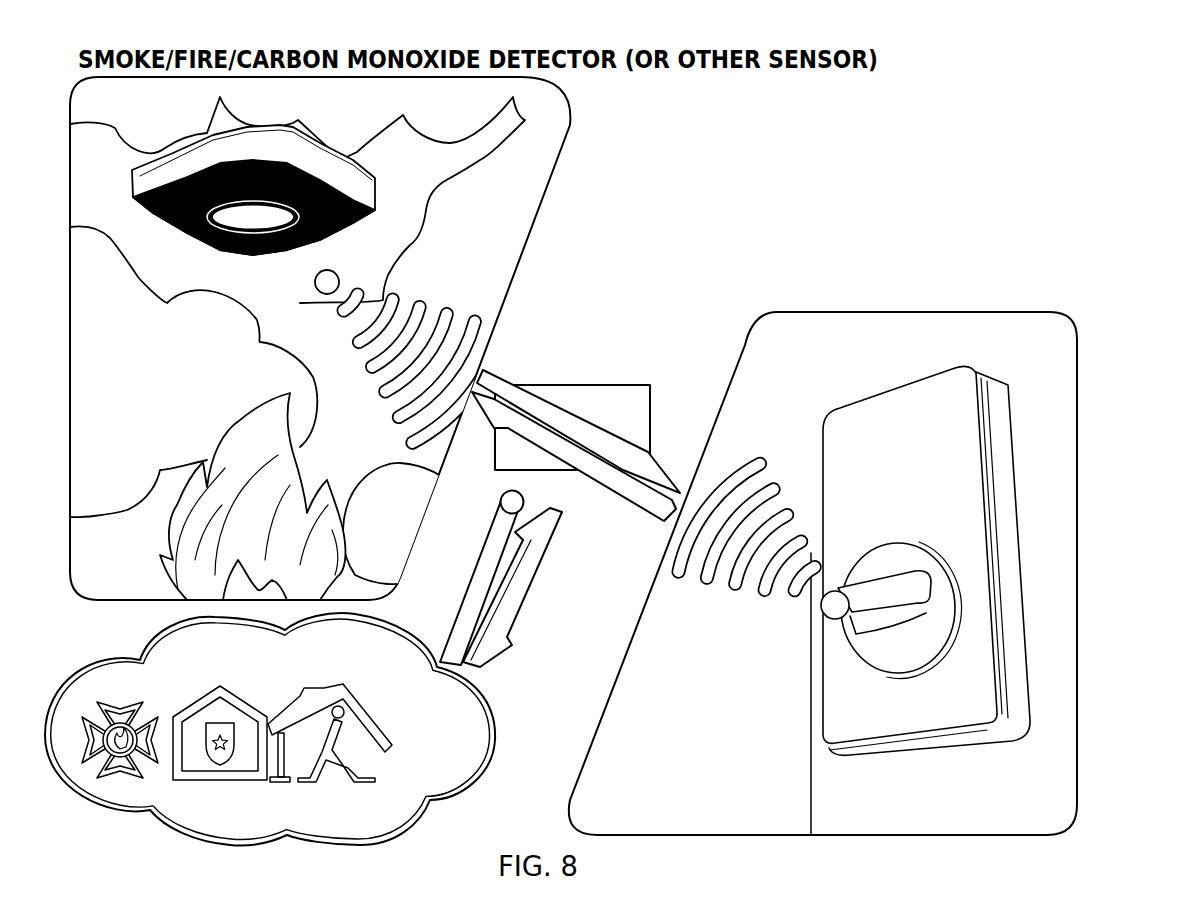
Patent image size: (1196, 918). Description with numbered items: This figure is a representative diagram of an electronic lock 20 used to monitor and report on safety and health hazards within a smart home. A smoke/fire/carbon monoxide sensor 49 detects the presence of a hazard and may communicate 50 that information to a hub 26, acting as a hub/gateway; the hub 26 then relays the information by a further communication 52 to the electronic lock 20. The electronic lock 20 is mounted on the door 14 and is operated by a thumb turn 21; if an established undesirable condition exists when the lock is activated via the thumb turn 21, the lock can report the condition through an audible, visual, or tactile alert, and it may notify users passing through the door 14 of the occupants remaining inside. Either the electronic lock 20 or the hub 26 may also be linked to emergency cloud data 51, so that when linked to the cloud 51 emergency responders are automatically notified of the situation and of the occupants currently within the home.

The door 14 is at (1048, 603).
The electronic lock 20 is at (960, 388).
The thumb turn 21 is at (887, 590).
The hub 26 is at (650, 385).
The smoke/fire/carbon monoxide sensor 49 is at (346, 176).
The communication 50 is at (418, 307).
The emergency cloud data 51 is at (408, 807).
The communication 52 is at (757, 472).